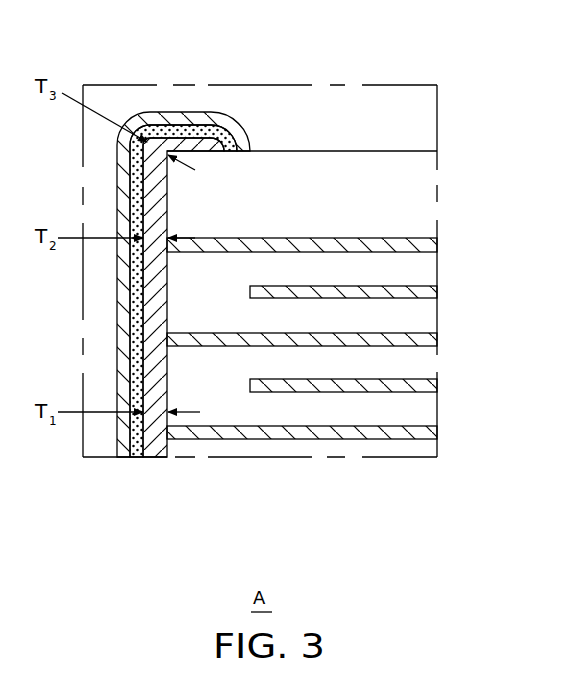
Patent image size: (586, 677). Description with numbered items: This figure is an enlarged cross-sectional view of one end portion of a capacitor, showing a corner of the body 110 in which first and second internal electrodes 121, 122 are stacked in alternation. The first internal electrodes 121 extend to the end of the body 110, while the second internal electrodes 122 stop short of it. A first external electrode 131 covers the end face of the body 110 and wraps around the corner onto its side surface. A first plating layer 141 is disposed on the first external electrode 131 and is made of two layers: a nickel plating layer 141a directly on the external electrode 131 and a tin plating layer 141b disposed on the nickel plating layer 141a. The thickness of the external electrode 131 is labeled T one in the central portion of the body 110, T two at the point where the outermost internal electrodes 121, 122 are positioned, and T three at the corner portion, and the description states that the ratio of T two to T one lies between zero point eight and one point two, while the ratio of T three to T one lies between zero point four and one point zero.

The body 110 is at (330, 151).
The first internal electrode 121 is at (430, 246).
The second internal electrode 122 is at (430, 293).
The first external electrode 131 is at (153, 458).
The first plating layer 141 is at (156, 340).
The nickel plating layer 141a is at (133, 458).
The tin plating layer 141b is at (168, 529).